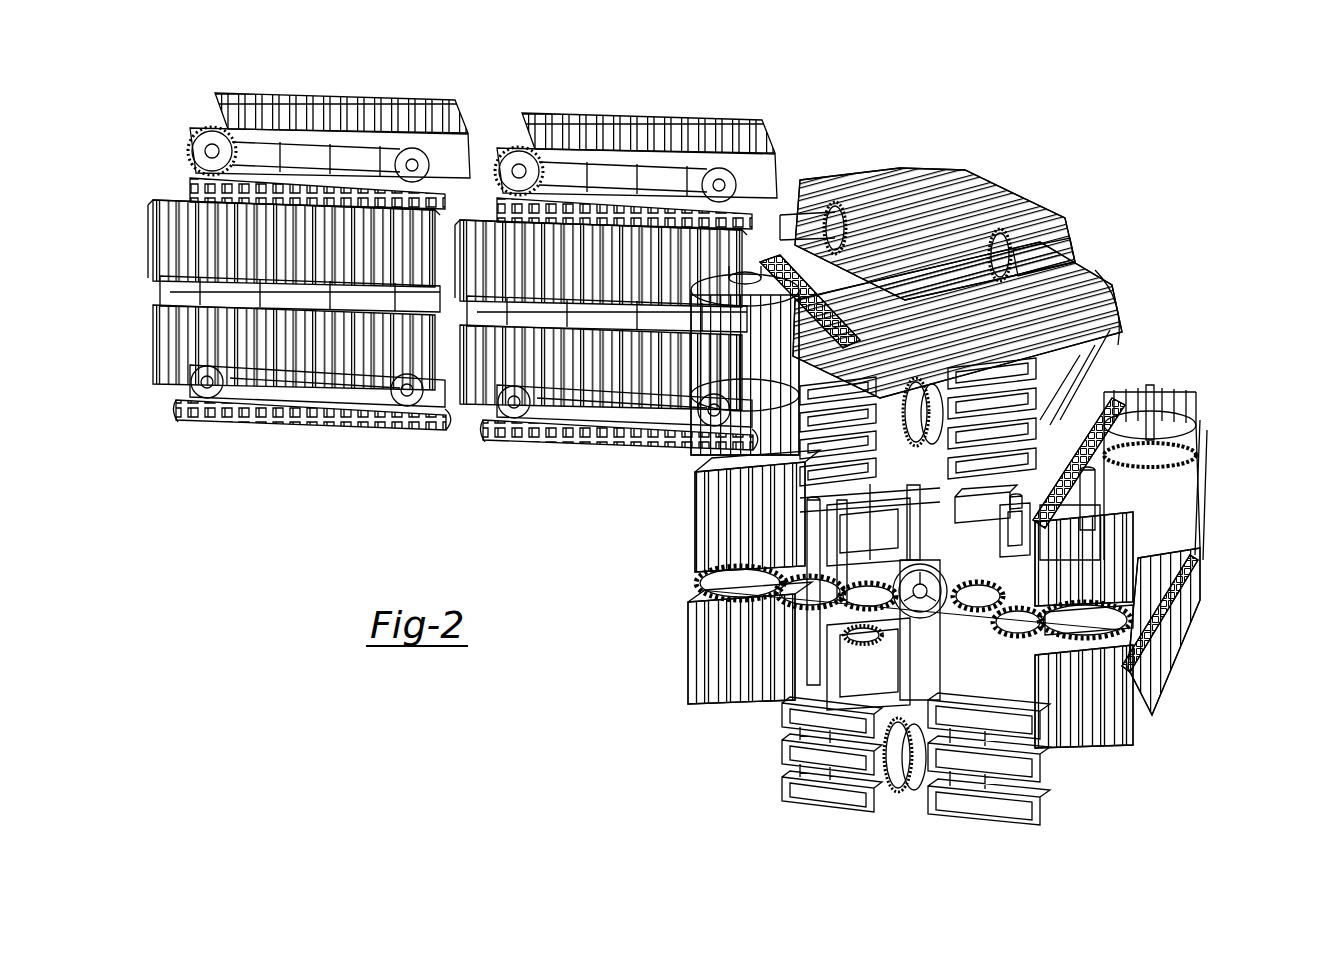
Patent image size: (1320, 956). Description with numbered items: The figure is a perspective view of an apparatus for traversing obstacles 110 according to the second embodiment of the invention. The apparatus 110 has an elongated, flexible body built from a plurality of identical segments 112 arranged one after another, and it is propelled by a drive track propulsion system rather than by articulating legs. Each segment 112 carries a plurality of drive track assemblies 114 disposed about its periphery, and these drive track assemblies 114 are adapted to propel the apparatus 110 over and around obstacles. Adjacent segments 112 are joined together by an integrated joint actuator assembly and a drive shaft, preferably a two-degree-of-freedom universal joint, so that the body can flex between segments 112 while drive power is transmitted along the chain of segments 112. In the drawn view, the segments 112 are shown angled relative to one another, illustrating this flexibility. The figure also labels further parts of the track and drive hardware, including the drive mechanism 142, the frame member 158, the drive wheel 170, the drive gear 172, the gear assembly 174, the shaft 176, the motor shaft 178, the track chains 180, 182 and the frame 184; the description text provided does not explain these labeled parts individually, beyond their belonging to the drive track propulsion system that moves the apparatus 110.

The apparatus for traversing obstacles 110 is at (1110, 197).
The segment 112 is at (997, 154).
The drive track assembly 114 is at (453, 104).
The drive mechanism 142 is at (776, 711).
The frame member 158 is at (926, 600).
The drive wheel 170 is at (956, 578).
The drive gear 172 is at (1055, 616).
The gear assembly 174 is at (1125, 620).
The shaft 176 is at (1090, 504).
The motor shaft 178 is at (1097, 534).
The track chain 180 is at (1187, 452).
The track chain 182 is at (1160, 662).
The frame 184 is at (1202, 408).